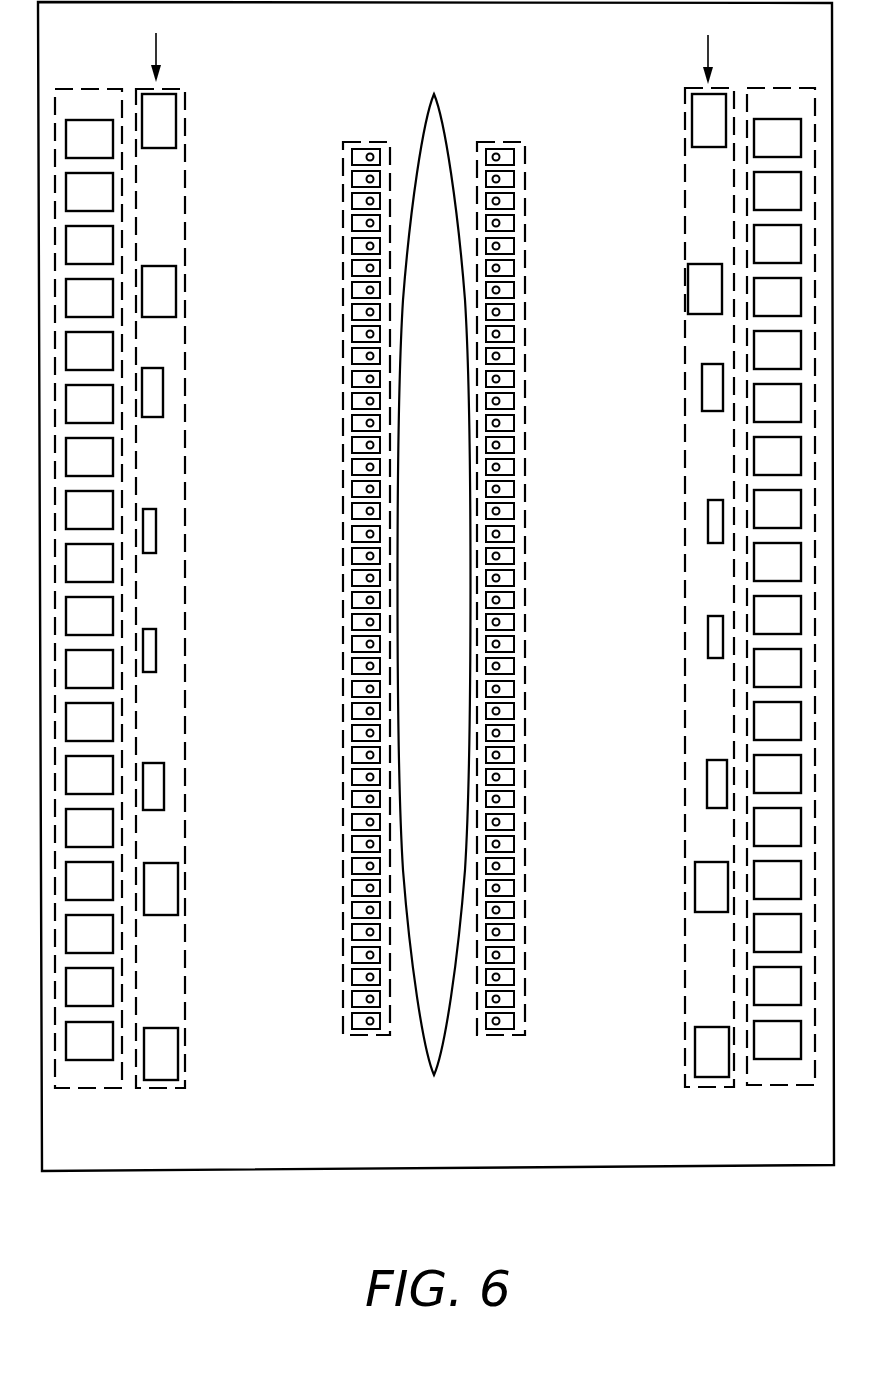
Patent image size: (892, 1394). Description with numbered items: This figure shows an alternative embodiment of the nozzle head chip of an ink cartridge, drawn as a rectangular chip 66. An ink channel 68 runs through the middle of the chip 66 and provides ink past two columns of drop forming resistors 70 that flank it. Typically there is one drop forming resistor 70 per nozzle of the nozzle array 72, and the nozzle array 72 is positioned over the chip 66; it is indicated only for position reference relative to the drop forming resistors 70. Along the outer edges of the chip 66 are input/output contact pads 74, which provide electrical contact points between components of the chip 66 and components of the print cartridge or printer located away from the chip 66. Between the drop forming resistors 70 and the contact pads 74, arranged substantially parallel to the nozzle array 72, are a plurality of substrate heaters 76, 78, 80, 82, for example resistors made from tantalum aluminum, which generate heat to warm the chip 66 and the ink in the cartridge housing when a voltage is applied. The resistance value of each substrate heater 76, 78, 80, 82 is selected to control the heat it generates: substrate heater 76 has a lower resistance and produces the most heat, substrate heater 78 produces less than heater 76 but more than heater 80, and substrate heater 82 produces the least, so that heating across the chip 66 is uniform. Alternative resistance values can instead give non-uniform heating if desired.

The chip 66 is at (222, 1178).
The ink channel 68 is at (452, 611).
The drop forming resistors 70 is at (434, 546).
The nozzle array 72 is at (437, 1038).
The input/output contact pads 74 is at (435, 546).
The substrate heater 76 is at (160, 118).
The substrate heater 78 is at (160, 290).
The substrate heater 80 is at (158, 395).
The substrate heater 82 is at (152, 532).